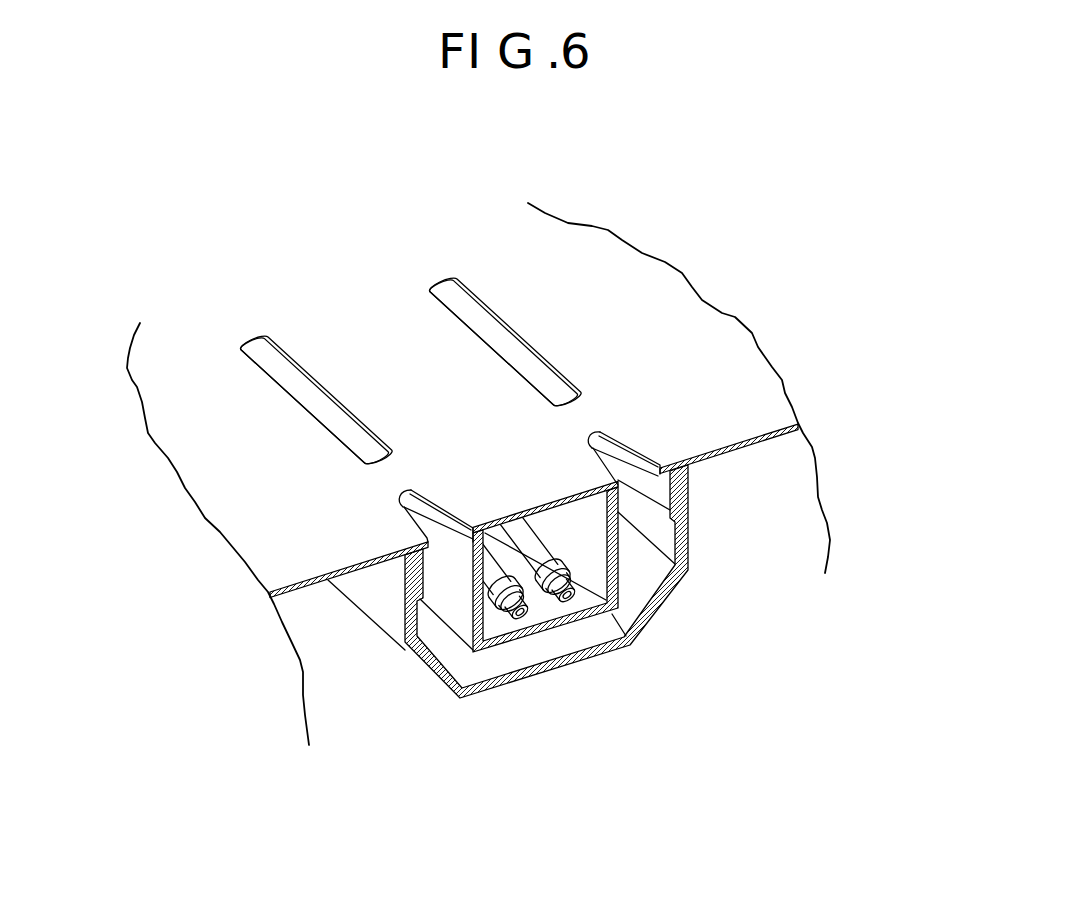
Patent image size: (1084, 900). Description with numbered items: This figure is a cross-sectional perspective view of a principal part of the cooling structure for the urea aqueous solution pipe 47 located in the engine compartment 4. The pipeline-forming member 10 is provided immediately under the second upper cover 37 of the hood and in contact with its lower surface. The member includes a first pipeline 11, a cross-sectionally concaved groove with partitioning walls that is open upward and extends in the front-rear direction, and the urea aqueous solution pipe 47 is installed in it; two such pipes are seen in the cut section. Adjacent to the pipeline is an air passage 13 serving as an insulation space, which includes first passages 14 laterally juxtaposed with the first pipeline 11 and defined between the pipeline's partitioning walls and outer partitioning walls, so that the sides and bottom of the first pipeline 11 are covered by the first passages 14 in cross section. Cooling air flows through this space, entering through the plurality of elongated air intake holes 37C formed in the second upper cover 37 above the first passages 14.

The engine compartment 4 is at (507, 474).
The pipeline-forming member 10 is at (552, 612).
The first pipeline 11 is at (576, 540).
The air passage 13 is at (505, 660).
The first passages 14 is at (452, 650).
The second upper cover 37 is at (688, 302).
The air intake holes 37C is at (318, 386).
The urea aqueous solution pipe 47 is at (498, 573).